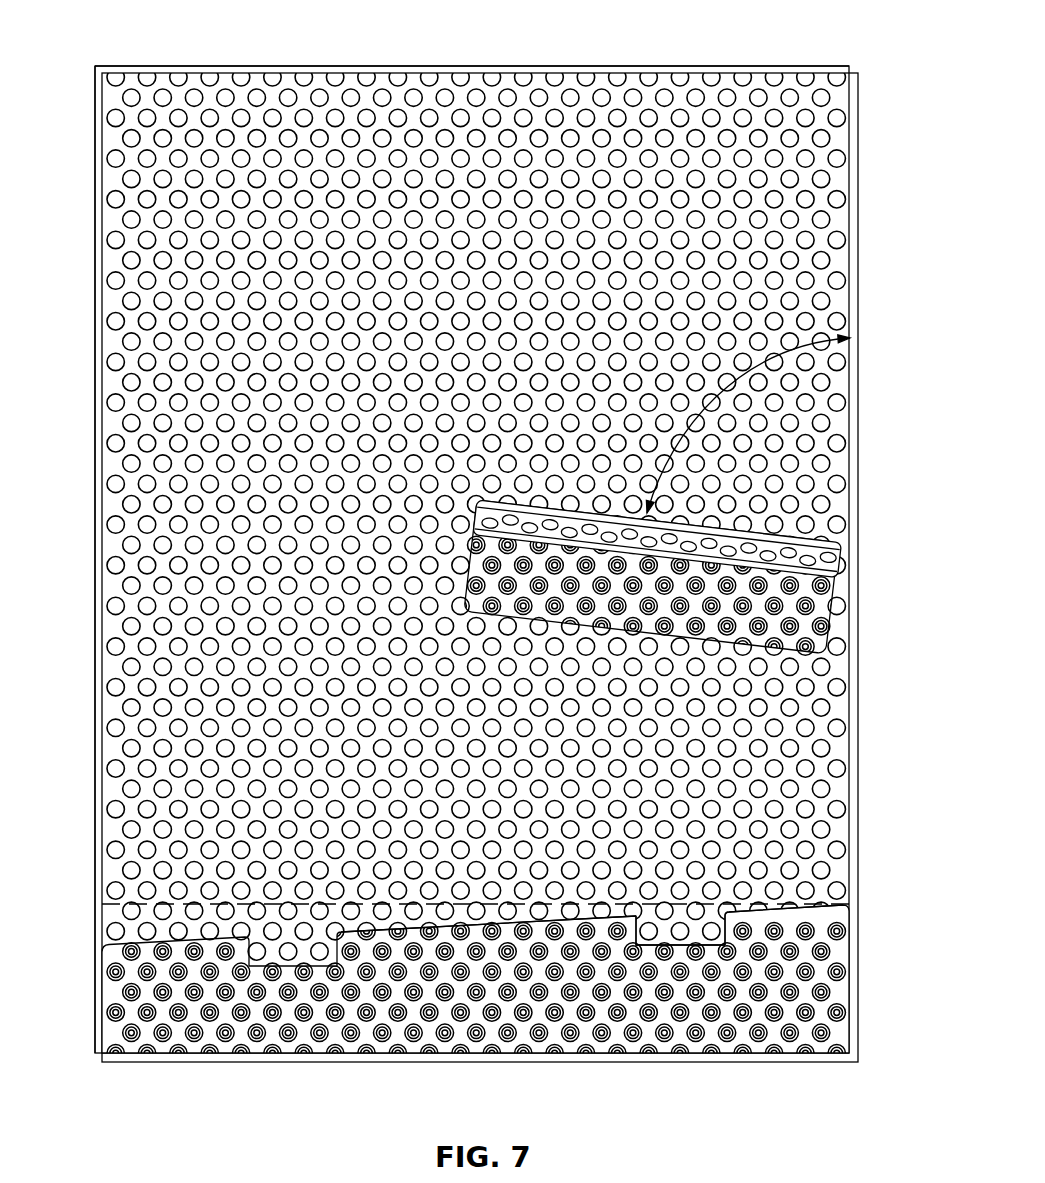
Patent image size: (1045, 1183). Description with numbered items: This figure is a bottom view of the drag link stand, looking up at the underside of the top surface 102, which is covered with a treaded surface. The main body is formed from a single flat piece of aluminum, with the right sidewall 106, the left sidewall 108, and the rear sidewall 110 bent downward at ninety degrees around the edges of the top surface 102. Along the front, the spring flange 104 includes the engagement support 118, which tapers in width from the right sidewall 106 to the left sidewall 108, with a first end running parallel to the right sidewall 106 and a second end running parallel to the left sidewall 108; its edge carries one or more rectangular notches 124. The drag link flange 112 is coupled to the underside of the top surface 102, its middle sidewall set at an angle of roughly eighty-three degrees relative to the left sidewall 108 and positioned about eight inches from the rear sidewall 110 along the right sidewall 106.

The top surface 102 is at (160, 674).
The spring flange 104 is at (132, 1042).
The right sidewall 106 is at (102, 578).
The left sidewall 108 is at (848, 547).
The rear sidewall 110 is at (221, 72).
The drag link flange 112 is at (820, 603).
The engagement support 118 is at (822, 1003).
The rectangular notches 124 is at (655, 942).